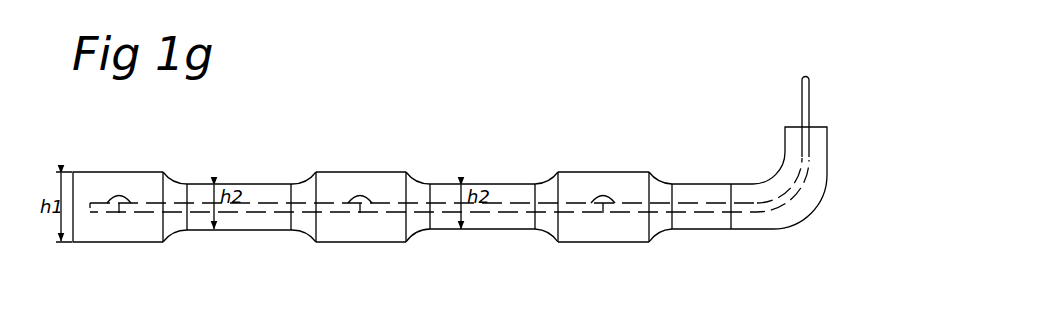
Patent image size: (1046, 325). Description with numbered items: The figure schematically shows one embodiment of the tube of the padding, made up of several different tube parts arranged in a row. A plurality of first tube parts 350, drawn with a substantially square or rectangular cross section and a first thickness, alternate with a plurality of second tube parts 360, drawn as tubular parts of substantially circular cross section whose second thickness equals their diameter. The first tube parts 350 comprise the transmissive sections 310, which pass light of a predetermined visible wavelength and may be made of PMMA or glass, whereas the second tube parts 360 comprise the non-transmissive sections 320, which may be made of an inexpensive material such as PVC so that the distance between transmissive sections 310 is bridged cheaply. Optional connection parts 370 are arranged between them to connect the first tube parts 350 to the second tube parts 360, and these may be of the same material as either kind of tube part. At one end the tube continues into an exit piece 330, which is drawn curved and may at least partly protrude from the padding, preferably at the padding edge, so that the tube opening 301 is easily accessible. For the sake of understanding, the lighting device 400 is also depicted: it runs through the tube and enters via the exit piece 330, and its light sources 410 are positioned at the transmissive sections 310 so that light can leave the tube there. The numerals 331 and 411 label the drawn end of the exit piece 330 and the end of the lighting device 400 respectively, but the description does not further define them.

The tube opening 301 is at (815, 124).
The transmissive section 310 is at (107, 172).
The non-transmissive section 320 is at (268, 184).
The exit piece 330 is at (821, 206).
The outlet opening 331 is at (799, 123).
The first tube part 350 is at (129, 167).
The second tube part 360 is at (238, 172).
The connection part 370 is at (181, 172).
The lighting device 400 is at (801, 85).
The light source 410 is at (117, 215).
The tube end 411 is at (801, 77).